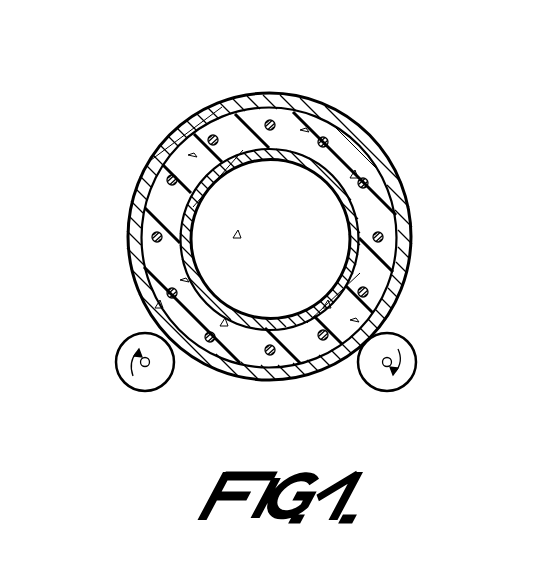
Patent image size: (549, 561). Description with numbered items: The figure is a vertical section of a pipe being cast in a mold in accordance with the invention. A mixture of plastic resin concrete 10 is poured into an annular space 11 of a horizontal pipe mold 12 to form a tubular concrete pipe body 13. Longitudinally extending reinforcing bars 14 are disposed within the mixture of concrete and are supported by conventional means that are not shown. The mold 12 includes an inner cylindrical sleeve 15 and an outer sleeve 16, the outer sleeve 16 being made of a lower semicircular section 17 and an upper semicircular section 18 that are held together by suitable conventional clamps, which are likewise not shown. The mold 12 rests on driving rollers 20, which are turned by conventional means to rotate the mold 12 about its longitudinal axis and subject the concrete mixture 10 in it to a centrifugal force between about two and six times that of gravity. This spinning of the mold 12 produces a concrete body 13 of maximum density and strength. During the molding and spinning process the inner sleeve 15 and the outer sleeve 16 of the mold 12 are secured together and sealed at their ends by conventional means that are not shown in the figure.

The mixture of plastic resin concrete 10 is at (352, 138).
The annular space 11 is at (381, 226).
The horizontal pipe mold 12 is at (412, 195).
The tubular concrete pipe body 13 is at (143, 206).
The reinforcing bars 14 is at (274, 121).
The inner cylindrical sleeve 15 is at (207, 190).
The outer sleeve 16 is at (407, 281).
The lower semicircular section 17 is at (410, 258).
The upper semicircular section 18 is at (165, 140).
The driving rollers 20 is at (158, 391).